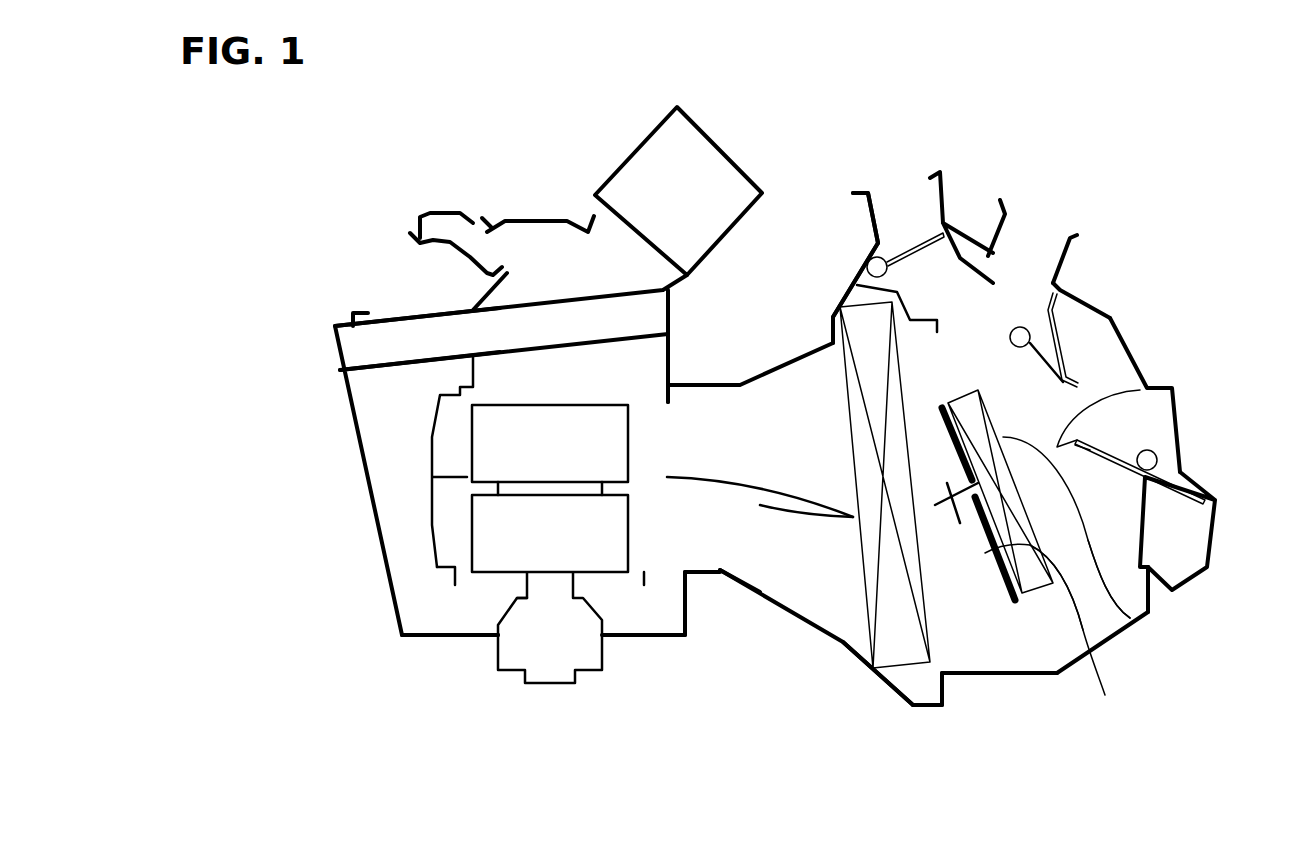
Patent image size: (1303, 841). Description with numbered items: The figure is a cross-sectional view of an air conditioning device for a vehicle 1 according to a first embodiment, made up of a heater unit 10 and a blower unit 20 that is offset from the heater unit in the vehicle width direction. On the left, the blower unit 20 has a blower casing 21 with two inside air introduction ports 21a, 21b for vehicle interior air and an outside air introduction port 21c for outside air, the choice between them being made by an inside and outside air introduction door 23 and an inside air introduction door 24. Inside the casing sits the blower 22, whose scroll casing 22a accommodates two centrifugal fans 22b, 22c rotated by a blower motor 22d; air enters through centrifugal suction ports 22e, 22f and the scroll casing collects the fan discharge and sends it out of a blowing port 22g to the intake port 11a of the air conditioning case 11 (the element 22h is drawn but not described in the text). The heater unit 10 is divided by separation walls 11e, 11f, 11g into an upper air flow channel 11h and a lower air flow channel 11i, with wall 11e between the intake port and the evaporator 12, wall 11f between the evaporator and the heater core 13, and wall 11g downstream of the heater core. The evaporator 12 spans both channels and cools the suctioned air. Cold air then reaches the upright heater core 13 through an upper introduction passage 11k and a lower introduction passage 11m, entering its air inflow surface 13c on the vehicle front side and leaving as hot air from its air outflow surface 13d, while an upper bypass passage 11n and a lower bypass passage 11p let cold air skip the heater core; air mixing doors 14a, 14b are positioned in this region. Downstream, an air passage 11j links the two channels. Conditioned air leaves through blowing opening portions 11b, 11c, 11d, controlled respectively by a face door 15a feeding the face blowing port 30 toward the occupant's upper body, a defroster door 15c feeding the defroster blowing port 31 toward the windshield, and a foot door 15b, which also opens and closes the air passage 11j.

The air conditioning device for a vehicle 1 is at (415, 764).
The heater unit 10 is at (810, 664).
The air conditioning case 11 is at (805, 353).
The intake port 11a is at (653, 479).
The blowing opening portion 11b is at (1022, 277).
The blowing opening portion 11c is at (910, 232).
The blowing opening portion 11d is at (1175, 535).
The separation wall 11e is at (768, 497).
The separation wall 11f is at (965, 540).
The separation wall 11g is at (1140, 388).
The upper air flow channel 11h is at (820, 462).
The lower air flow channel 11i is at (818, 575).
The air passage 11j is at (1112, 455).
The upper introduction passage 11k is at (940, 462).
The lower introduction passage 11m is at (967, 552).
The upper bypass passage 11n is at (955, 373).
The lower bypass passage 11p is at (1058, 672).
The evaporator 12 is at (895, 655).
The heater core 13 is at (1033, 633).
The air inflow surface 13c is at (1038, 582).
The air outflow surface 13d is at (1130, 618).
The air mixing door 14a is at (945, 433).
The air mixing door 14b is at (1022, 593).
The face door 15a is at (1058, 348).
The foot door 15b is at (1118, 448).
The defroster door 15c is at (960, 252).
The blower unit 20 is at (372, 547).
The blower casing 21 is at (348, 412).
The inside air introduction port 21a is at (418, 300).
The inside air introduction port 21b is at (538, 228).
The outside air introduction port 21c is at (683, 173).
The blower 22 is at (409, 508).
The scroll casing 22a is at (442, 568).
The centrifugal fan 22b is at (493, 450).
The centrifugal fan 22c is at (493, 557).
The blower motor 22d is at (547, 673).
The centrifugal suction port 22e is at (568, 390).
The centrifugal suction port 22f is at (508, 580).
The blowing port 22g is at (642, 479).
The upper partition plate 22h is at (362, 347).
The inside and outside air introduction door 23 is at (500, 212).
The inside air introduction door 24 is at (444, 247).
The face blowing port 30 is at (1045, 230).
The defroster blowing port 31 is at (898, 187).